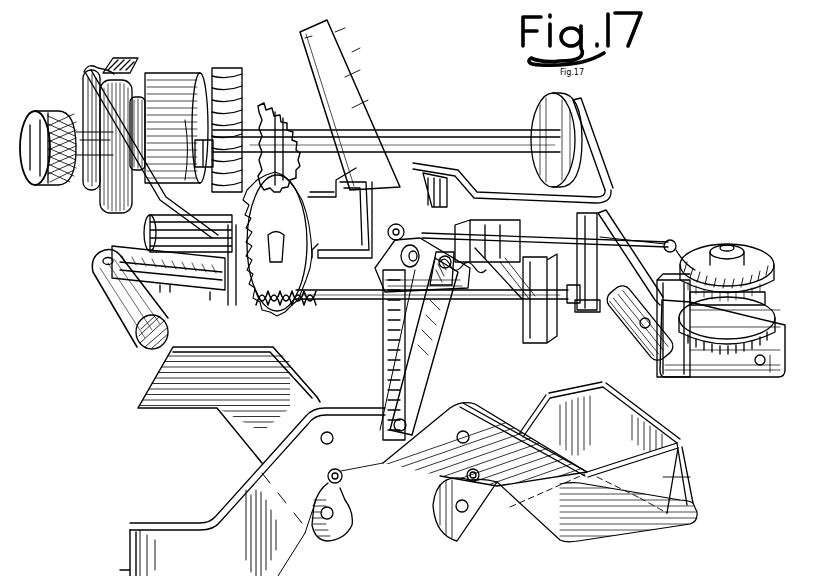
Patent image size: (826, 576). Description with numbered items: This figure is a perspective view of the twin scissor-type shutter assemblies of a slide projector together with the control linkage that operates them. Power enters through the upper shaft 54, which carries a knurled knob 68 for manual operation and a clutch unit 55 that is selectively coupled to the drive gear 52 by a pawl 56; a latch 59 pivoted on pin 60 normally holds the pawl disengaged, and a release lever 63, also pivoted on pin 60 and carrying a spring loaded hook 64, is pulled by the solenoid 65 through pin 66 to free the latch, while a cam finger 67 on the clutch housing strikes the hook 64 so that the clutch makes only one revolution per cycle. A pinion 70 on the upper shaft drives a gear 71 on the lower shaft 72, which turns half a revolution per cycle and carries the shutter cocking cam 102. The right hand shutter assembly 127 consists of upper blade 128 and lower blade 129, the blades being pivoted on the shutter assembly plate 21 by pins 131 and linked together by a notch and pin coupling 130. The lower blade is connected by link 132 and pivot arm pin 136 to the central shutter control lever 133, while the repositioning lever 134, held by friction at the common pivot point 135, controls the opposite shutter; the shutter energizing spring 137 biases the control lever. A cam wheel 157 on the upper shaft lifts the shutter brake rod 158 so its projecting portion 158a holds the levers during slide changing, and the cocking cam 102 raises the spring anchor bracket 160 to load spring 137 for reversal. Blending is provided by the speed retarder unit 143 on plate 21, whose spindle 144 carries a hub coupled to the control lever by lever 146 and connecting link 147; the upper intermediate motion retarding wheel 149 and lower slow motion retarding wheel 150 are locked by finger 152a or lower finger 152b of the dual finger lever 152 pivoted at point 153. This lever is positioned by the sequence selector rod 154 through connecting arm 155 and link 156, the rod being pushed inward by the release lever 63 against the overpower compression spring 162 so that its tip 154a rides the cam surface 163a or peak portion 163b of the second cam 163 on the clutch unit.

The shutter assembly plate 21 is at (150, 38).
The gear 52 is at (228, 90).
The upper shaft 54 is at (392, 128).
The clutch unit 55 is at (148, 68).
The pawl 56 is at (178, 136).
The latch 59 is at (198, 145).
The pin 60 is at (236, 300).
The release lever 63 is at (112, 248).
The spring loaded hook 64 is at (148, 228).
The solenoid 65 is at (128, 324).
The pin 66 is at (103, 263).
The cam finger 67 is at (104, 62).
The knurled knob 68 is at (42, 112).
The pinion 70 is at (282, 100).
The gear 71 is at (323, 192).
The lower shaft 72 is at (470, 258).
The shutter cocking cam 102 is at (492, 228).
The right hand shutter assembly 127 is at (262, 462).
The upper blade 128 is at (150, 388).
The lower blade 129 is at (126, 548).
The notch and pin coupling 130 is at (347, 505).
The pins 131 is at (330, 432).
The link 132 is at (420, 370).
The central shutter control lever 133 is at (345, 63).
The repositioning lever 134 is at (452, 190).
The common pivot point 135 is at (402, 265).
The pivot arm pin 136 is at (450, 268).
The shutter energizing spring 137 is at (333, 257).
The speed retarder unit 143 is at (728, 380).
The vertical spindle 144 is at (727, 245).
The lever 146 is at (688, 235).
The connecting link 147 is at (655, 240).
The upper intermediate motion retarding wheel 149 is at (770, 250).
The lower slow motion retarding wheel 150 is at (785, 345).
The dual finger lever 152 is at (660, 365).
The finger 152a is at (715, 300).
The lower finger 152b is at (715, 355).
The pivot point 153 is at (640, 328).
The sequence selector rod 154 is at (332, 298).
The inward projecting portion 154a is at (90, 72).
The connecting arm 155 is at (580, 312).
The link 156 is at (606, 216).
The cam wheel 157 is at (538, 112).
The shutter brake rod 158 is at (596, 152).
The projecting portion 158a is at (510, 170).
The spring anchor bracket 160 is at (520, 330).
The overpower compression spring 162 is at (310, 312).
The second cam 163 is at (88, 190).
The cam surface 163a is at (100, 183).
The peak portion 163b is at (150, 92).